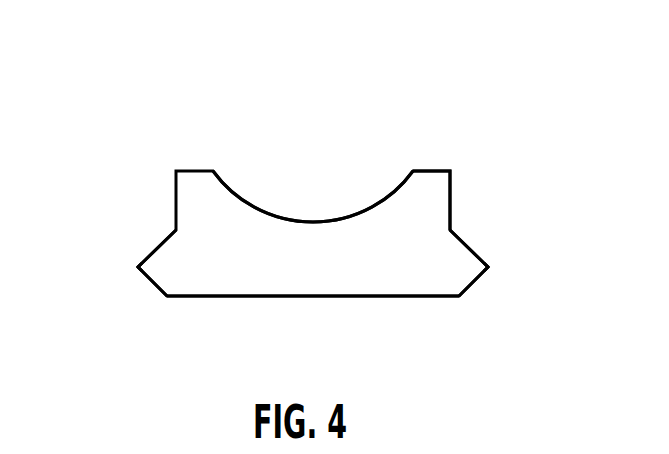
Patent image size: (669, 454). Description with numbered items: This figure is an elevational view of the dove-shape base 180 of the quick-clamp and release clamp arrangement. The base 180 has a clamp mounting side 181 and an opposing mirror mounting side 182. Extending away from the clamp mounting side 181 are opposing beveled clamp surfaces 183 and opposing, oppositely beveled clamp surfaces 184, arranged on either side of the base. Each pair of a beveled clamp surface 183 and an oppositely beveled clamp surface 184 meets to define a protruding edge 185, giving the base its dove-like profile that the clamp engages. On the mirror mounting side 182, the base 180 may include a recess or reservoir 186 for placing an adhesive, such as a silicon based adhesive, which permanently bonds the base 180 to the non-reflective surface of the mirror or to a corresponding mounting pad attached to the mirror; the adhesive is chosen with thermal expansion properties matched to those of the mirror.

The dove-shape base 180 is at (280, 84).
The clamp mounting side 181 is at (198, 302).
The mirror mounting side 182 is at (432, 170).
The beveled clamp surfaces 183 is at (147, 278).
The oppositely beveled clamp surfaces 184 is at (145, 253).
The protruding edge 185 is at (137, 267).
The recess or reservoir 186 is at (281, 219).